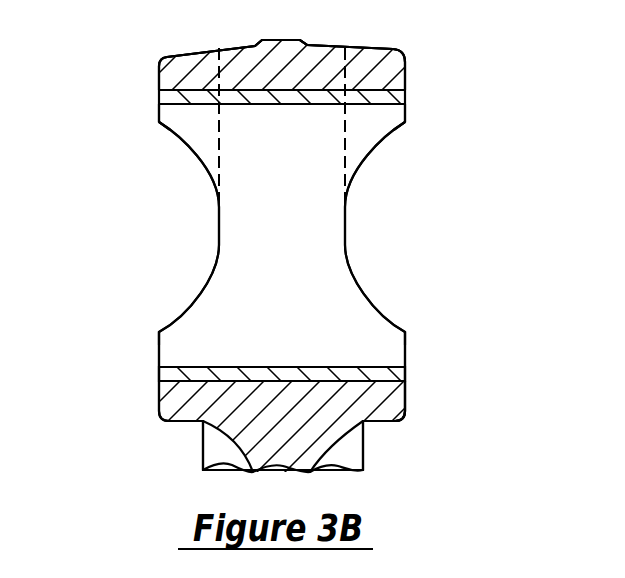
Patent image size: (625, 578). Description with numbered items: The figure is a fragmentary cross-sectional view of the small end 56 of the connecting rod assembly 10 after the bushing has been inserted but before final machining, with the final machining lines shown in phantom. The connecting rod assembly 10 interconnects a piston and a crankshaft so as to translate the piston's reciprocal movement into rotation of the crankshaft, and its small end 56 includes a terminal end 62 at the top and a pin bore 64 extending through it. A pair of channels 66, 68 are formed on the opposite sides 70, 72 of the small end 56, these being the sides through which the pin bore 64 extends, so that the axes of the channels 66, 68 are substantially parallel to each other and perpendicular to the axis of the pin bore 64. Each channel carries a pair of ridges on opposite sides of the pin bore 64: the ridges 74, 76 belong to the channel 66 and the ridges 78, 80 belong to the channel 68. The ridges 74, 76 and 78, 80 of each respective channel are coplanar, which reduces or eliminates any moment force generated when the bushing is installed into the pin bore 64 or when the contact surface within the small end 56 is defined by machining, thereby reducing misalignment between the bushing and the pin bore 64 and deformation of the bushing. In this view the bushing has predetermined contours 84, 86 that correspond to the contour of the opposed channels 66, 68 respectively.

The connecting rod assembly 10 is at (140, 449).
The small end 56 is at (436, 97).
The terminal end 62 is at (198, 50).
The pin bore 64 is at (152, 362).
The channel 66 is at (187, 161).
The channel 68 is at (369, 169).
The side 70 is at (160, 393).
The side 72 is at (406, 397).
The ridge 74 is at (159, 123).
The ridge 76 is at (158, 336).
The ridge 78 is at (406, 118).
The ridge 80 is at (406, 332).
The predetermined contour 84 is at (218, 236).
The predetermined contour 86 is at (346, 236).